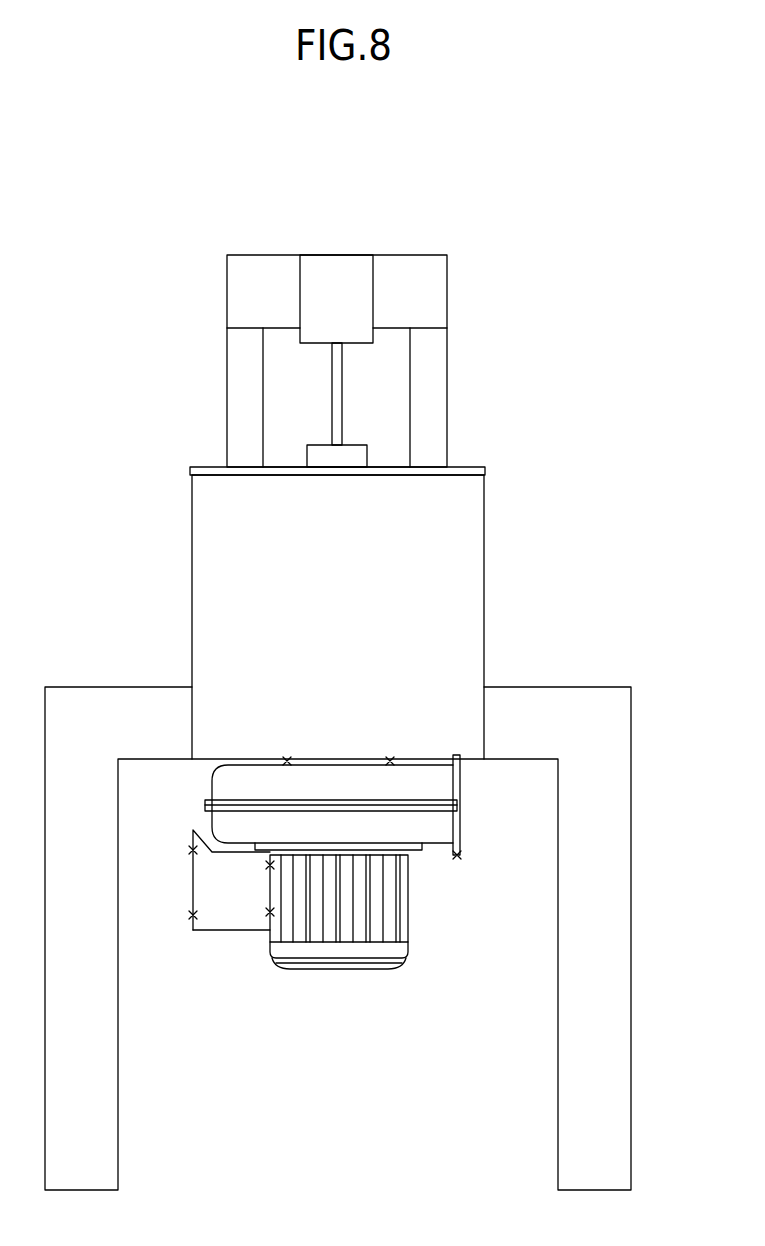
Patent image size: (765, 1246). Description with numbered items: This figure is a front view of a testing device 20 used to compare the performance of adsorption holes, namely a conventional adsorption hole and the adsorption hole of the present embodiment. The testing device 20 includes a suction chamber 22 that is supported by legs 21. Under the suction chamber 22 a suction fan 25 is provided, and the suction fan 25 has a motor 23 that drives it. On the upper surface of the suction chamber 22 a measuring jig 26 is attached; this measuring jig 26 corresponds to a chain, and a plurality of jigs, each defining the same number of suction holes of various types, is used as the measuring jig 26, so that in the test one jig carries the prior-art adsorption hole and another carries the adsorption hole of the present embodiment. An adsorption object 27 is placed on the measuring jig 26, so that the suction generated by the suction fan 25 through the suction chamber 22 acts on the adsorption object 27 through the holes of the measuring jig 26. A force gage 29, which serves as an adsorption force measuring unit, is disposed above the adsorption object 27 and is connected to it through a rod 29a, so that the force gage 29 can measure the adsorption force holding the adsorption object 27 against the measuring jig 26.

The testing device 20 is at (557, 228).
The legs 21 is at (630, 1000).
The suction chamber 22 is at (484, 585).
The motor 23 is at (408, 912).
The suction fan 25 is at (445, 783).
The measuring jig 26 is at (472, 467).
The adsorption object 27 is at (355, 445).
The force gage 29 is at (335, 257).
The rod 29a is at (342, 367).